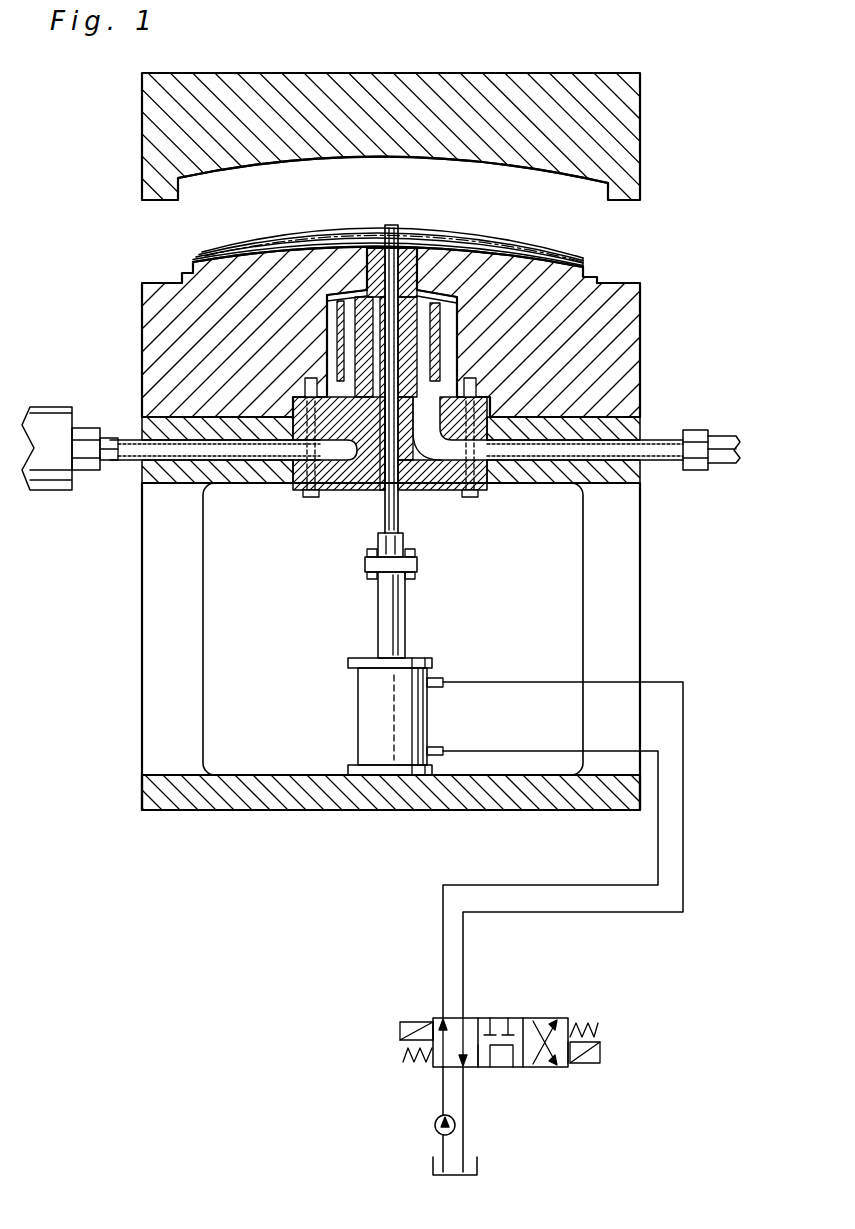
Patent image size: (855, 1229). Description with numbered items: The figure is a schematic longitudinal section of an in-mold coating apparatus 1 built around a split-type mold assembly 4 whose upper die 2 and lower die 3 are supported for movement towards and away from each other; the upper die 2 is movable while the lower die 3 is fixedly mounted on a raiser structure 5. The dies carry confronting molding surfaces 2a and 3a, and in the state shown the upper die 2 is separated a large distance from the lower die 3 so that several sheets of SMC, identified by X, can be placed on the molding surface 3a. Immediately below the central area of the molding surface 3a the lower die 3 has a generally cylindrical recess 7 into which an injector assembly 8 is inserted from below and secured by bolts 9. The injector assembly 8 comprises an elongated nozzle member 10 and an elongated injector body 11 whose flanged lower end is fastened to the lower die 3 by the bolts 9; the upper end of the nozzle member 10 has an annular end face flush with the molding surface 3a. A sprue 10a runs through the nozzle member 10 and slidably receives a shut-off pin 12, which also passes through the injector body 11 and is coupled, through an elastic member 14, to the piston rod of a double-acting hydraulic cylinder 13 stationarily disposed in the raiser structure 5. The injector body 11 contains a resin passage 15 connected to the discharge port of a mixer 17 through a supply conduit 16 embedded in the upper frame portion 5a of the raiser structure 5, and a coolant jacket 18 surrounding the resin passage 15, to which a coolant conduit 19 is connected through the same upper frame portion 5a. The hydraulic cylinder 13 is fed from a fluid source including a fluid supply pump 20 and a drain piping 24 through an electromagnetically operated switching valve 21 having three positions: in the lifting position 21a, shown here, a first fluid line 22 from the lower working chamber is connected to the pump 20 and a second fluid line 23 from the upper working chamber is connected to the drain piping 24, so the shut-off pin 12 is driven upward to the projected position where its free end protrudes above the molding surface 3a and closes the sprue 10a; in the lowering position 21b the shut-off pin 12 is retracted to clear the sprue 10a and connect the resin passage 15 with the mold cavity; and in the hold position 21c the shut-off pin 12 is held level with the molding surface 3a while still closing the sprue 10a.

The in-mold coating apparatus 1 is at (690, 150).
The upper die 2 is at (636, 184).
The molding surface 2a is at (514, 161).
The lower die 3 is at (630, 306).
The molding surface 3a is at (498, 238).
The split-type mold assembly 4 is at (722, 207).
The raiser structure 5 is at (627, 587).
The upper frame portion 5a is at (238, 478).
The cylindrical recess 7 is at (455, 310).
The injector assembly 8 is at (333, 498).
The bolts 9 is at (303, 494).
The nozzle member 10 is at (377, 252).
The sprue 10a is at (412, 248).
The injector body 11 is at (422, 492).
The shut-off pin 12 is at (388, 226).
The double-acting hydraulic cylinder 13 is at (370, 715).
The elastic member 14 is at (405, 542).
The resin passage 15 is at (366, 492).
The supply conduit 16 is at (110, 450).
The mixer 17 is at (48, 422).
The coolant jacket 18 is at (452, 493).
The coolant conduit 19 is at (668, 460).
The fluid supply pump 20 is at (436, 1126).
The electromagnetically operated switching valve 21 is at (532, 1012).
The lifting position 21a is at (438, 1068).
The lowering position 21b is at (562, 1068).
The hold position 21c is at (515, 1068).
The first fluid line 22 is at (498, 751).
The second fluid line 23 is at (493, 682).
The drain piping 24 is at (466, 1133).
The SMC sheets X is at (252, 252).